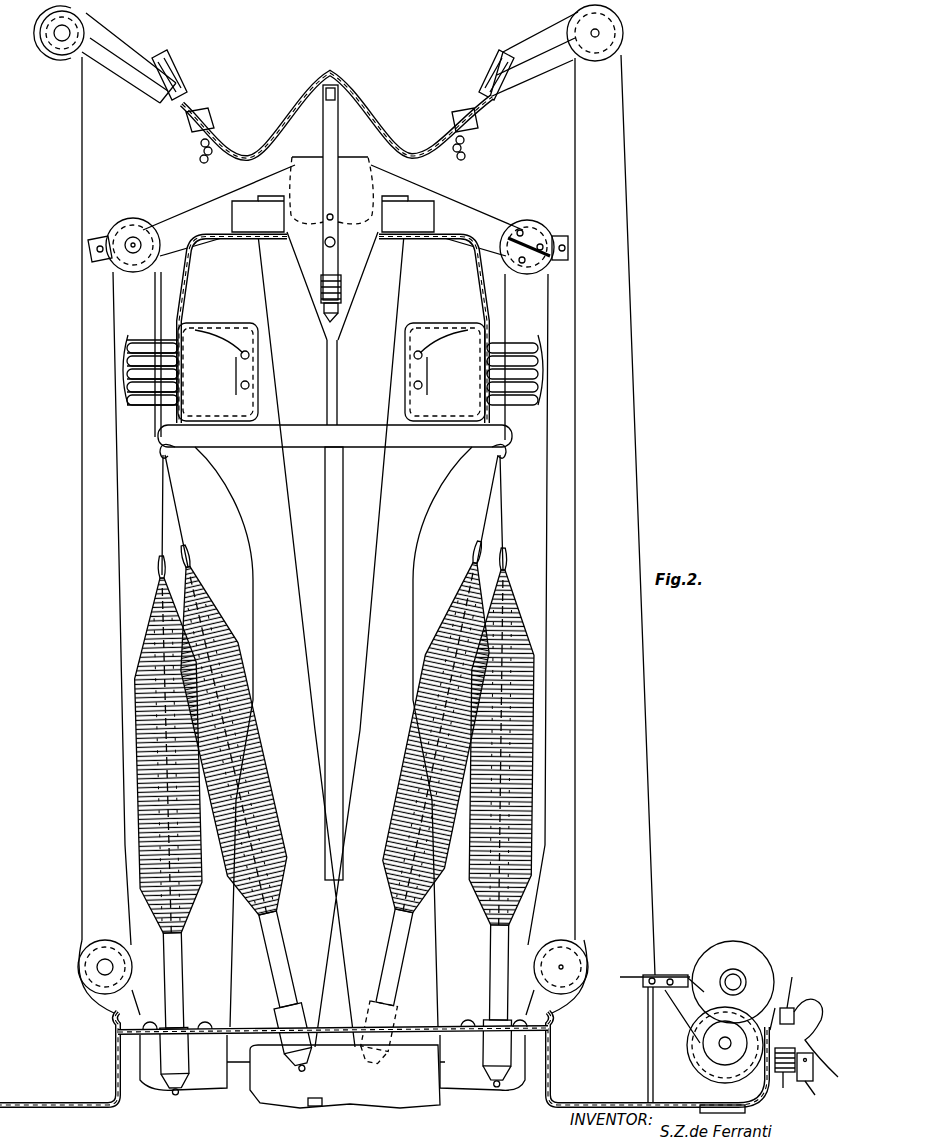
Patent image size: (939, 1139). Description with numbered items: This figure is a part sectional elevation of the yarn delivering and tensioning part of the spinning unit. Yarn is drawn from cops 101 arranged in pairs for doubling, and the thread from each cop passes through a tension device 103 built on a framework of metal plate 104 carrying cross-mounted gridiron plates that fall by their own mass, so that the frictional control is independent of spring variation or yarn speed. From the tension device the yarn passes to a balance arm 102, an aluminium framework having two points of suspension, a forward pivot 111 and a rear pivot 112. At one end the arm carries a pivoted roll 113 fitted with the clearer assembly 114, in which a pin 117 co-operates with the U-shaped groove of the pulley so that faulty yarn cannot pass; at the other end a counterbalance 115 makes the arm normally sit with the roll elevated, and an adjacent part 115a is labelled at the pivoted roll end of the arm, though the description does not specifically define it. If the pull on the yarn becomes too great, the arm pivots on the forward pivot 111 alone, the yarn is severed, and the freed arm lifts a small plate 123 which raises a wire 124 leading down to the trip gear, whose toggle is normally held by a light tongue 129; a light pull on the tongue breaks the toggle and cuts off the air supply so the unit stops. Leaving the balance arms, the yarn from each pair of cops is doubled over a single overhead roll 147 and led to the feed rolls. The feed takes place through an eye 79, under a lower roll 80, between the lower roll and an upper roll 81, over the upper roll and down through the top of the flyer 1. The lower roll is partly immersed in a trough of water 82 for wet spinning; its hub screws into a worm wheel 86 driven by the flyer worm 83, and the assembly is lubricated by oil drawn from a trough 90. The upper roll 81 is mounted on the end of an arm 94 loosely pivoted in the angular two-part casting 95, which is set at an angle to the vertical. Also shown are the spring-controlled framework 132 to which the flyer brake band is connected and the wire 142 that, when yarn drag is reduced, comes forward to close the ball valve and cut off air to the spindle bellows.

The flyer 1 is at (783, 1007).
The eye 79 is at (658, 976).
The lower roll 80 is at (707, 1047).
The upper roll 81 is at (742, 957).
The trough of water 82 is at (120, 1073).
The flyer worm 83 is at (788, 1053).
The worm wheel 86 is at (708, 1087).
The trough 90 is at (745, 1107).
The arm 94 is at (682, 979).
The angular two-part casting 95 is at (658, 1018).
The cop 101 is at (252, 765).
The balance arm 102 is at (188, 214).
The tension device 103 is at (152, 347).
The framework of metal plate 104 is at (215, 377).
The forward pivot 111 is at (237, 204).
The rear pivot 112 is at (269, 200).
The pivoted roll 113 is at (535, 232).
The clearer assembly 114 is at (95, 238).
The counterbalance 115 is at (377, 180).
The pulley axle 115a is at (148, 243).
The pin 117 is at (120, 222).
The small plate 123 is at (318, 296).
The wire 124 is at (388, 418).
The tongue 129 is at (320, 1103).
The spring-controlled framework 132 is at (803, 1080).
The wire 142 is at (797, 1010).
The overhead roll 147 is at (74, 26).